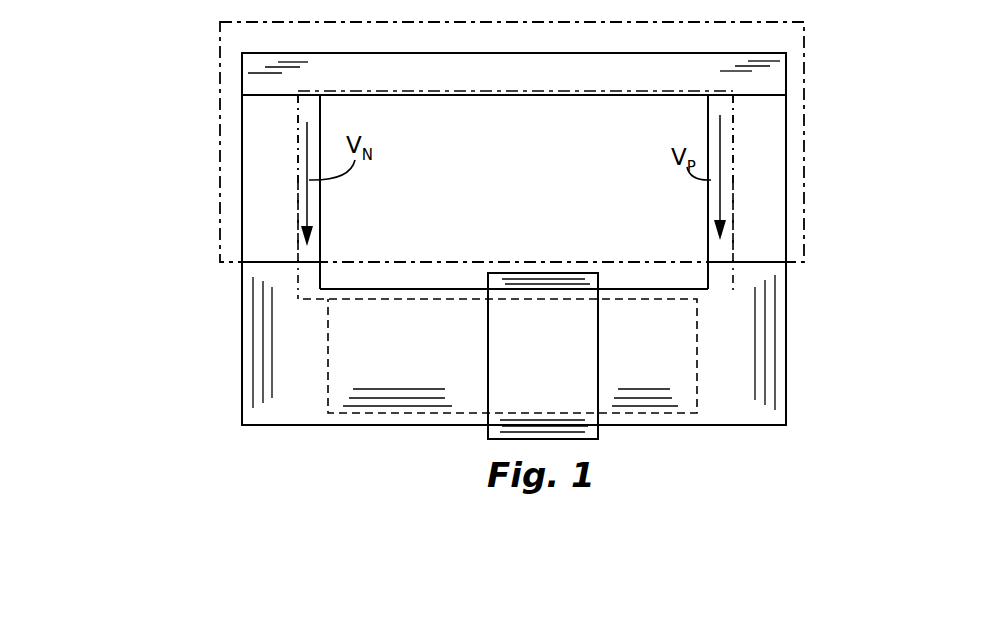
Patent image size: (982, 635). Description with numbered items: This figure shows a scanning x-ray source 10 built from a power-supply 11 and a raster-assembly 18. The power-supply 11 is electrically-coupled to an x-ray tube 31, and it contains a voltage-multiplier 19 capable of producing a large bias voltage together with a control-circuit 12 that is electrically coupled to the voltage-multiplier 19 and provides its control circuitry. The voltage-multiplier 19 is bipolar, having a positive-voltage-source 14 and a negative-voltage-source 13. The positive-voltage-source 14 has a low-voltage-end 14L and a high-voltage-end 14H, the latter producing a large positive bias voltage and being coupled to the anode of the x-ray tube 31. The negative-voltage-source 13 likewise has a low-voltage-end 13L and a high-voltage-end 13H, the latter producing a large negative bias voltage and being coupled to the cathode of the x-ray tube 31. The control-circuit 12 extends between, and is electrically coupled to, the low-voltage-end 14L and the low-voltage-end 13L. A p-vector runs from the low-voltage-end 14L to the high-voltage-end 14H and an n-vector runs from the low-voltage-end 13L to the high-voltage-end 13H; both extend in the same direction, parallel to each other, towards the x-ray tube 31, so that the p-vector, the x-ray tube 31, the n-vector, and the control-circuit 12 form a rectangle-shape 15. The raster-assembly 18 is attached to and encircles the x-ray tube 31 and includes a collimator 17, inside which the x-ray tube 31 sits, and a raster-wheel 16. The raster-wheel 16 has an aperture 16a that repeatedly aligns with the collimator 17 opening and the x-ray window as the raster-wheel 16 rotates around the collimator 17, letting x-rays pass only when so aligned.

The scanning x-ray source 10 is at (160, 58).
The power-supply 11 is at (805, 97).
The control-circuit 12 is at (527, 85).
The negative-voltage-source 13 is at (281, 184).
The low-voltage-end of the negative-voltage-source 13L is at (250, 97).
The high-voltage-end of the negative-voltage-source 13H is at (269, 248).
The positive-voltage-source 14 is at (771, 185).
The low-voltage-end of the positive-voltage-source 14L is at (741, 97).
The high-voltage-end of the positive-voltage-source 14H is at (761, 248).
The rectangle-shape 15 is at (715, 298).
The raster-wheel 16 is at (558, 333).
The aperture 16a is at (549, 358).
The collimator 17 is at (317, 356).
The raster-assembly 18 is at (810, 400).
The voltage-multiplier 19 is at (253, 203).
The x-ray tube 31 is at (322, 380).